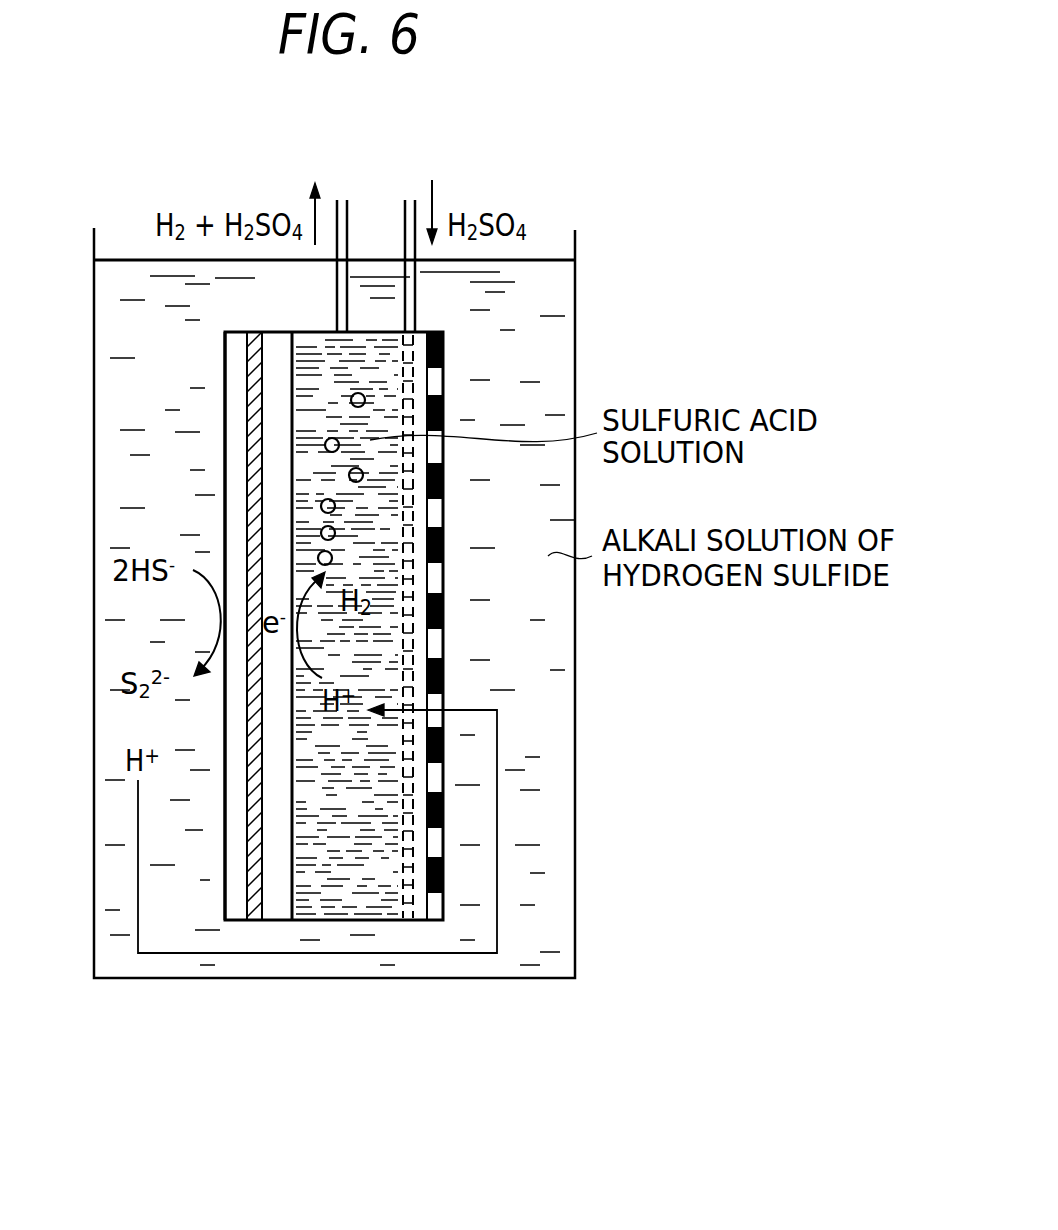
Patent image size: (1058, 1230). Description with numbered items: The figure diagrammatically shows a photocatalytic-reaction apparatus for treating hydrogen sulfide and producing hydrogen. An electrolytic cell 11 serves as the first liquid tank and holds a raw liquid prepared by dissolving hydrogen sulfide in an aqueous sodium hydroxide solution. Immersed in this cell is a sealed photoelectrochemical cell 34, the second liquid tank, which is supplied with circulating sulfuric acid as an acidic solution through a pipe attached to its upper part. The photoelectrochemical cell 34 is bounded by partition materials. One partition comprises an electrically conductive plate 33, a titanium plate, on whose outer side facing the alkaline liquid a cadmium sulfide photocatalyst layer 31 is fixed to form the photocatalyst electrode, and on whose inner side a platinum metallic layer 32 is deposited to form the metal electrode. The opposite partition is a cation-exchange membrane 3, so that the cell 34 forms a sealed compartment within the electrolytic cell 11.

The electrolytic cell 11 is at (575, 790).
The cation-exchange membrane 3 is at (430, 918).
The photocatalyst layer 31 is at (228, 916).
The electrically conductive plate 33 is at (248, 918).
The metallic layer 32 is at (282, 918).
The photoelectrochemical cell 34 is at (443, 340).